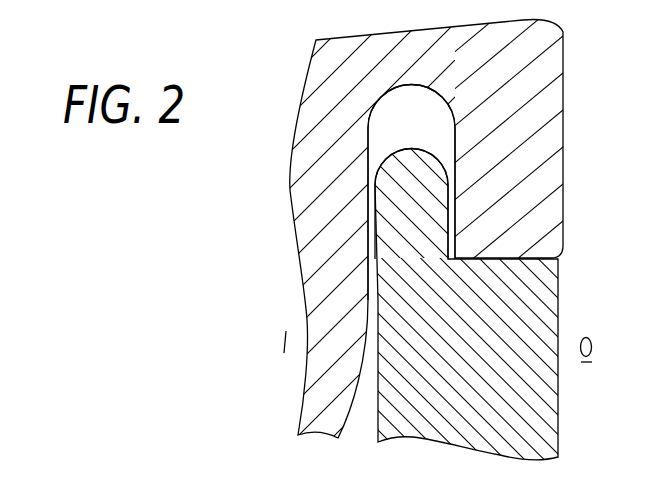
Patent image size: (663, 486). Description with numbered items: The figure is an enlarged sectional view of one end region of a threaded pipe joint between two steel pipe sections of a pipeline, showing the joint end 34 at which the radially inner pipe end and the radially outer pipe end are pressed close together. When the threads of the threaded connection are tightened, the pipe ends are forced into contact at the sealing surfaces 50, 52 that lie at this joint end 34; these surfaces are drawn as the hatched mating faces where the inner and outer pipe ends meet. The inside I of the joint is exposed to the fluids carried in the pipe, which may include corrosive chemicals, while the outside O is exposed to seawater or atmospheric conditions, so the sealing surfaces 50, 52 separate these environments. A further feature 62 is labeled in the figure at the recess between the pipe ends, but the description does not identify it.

The groove 62 is at (368, 150).
The joint end 34 is at (446, 258).
The sealing surface 52 is at (545, 258).
The sealing surface 50 is at (465, 264).